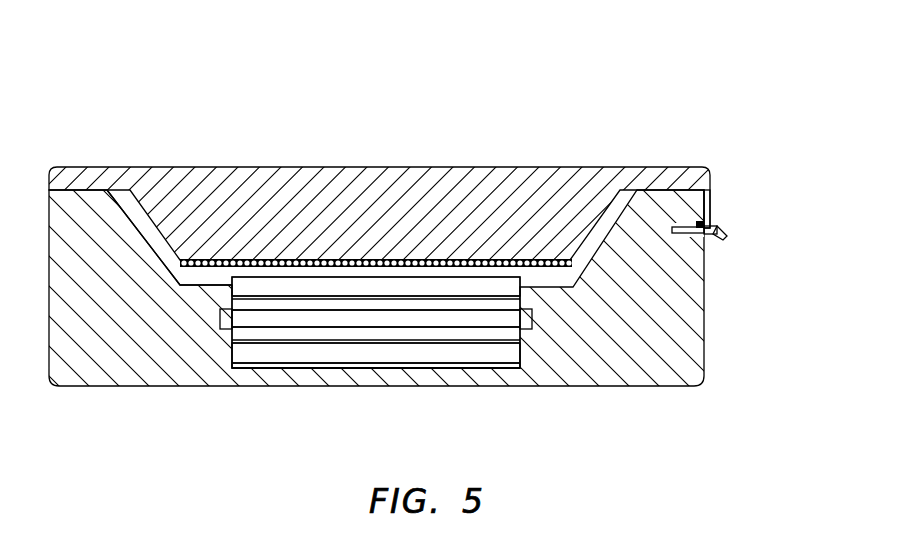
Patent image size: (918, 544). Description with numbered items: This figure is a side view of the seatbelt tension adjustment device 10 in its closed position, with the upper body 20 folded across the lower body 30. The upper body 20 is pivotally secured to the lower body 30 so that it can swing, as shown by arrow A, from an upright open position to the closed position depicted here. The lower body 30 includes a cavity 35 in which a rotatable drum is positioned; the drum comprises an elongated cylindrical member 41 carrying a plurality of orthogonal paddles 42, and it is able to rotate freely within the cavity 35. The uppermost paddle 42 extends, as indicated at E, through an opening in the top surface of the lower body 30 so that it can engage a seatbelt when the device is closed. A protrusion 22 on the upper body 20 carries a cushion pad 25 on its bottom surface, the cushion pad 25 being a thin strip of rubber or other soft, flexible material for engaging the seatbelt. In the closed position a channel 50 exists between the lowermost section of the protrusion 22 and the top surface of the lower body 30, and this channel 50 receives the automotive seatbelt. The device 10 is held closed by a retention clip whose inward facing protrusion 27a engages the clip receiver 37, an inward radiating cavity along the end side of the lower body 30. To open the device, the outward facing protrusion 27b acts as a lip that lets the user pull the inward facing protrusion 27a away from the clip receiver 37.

The seatbelt tension adjustment device 10 is at (206, 86).
The upper body 20 is at (347, 160).
The protrusion 22 is at (385, 235).
The cushion pad 25 is at (290, 258).
The lower body 30 is at (115, 392).
The cavity 35 is at (409, 368).
The retention clip receiver 37 is at (683, 236).
The elongated cylindrical member 41 is at (503, 320).
The paddles 42 is at (507, 284).
The channel 50 is at (452, 262).
The inward facing protrusion 27a is at (700, 224).
The outward facing protrusion 27b is at (727, 237).
The extension of the uppermost paddle E is at (218, 285).
The swing arrow A is at (712, 103).